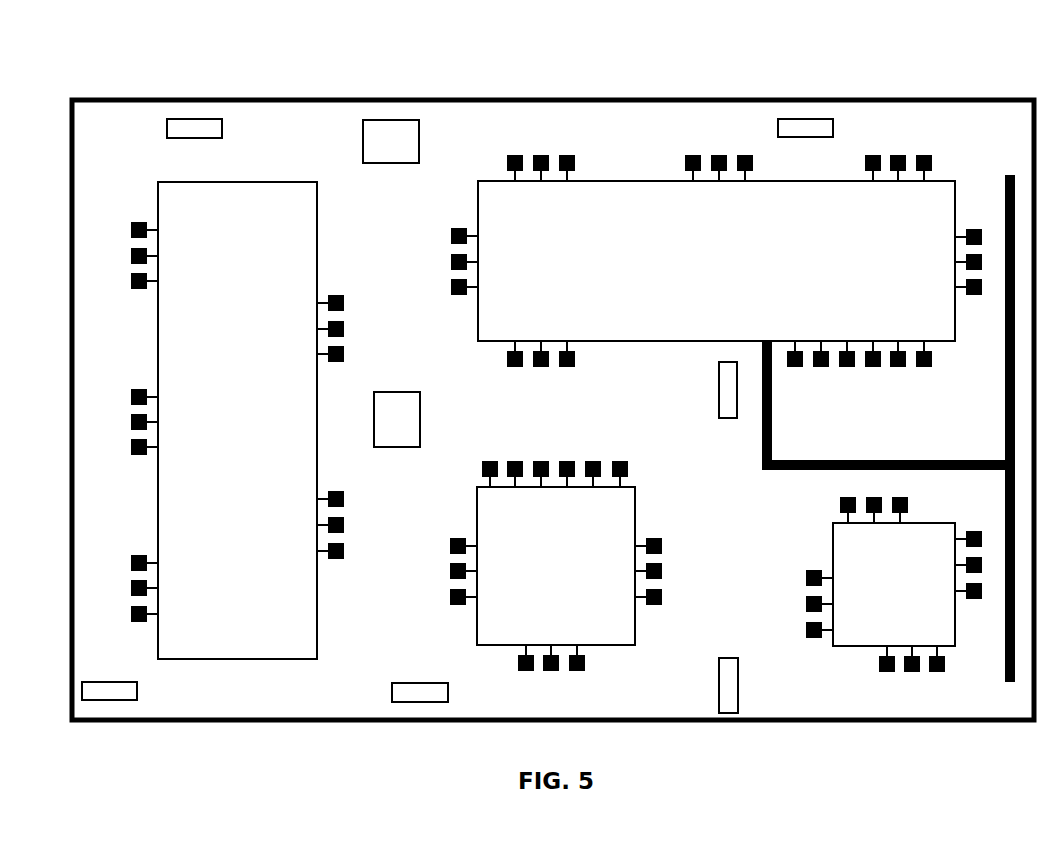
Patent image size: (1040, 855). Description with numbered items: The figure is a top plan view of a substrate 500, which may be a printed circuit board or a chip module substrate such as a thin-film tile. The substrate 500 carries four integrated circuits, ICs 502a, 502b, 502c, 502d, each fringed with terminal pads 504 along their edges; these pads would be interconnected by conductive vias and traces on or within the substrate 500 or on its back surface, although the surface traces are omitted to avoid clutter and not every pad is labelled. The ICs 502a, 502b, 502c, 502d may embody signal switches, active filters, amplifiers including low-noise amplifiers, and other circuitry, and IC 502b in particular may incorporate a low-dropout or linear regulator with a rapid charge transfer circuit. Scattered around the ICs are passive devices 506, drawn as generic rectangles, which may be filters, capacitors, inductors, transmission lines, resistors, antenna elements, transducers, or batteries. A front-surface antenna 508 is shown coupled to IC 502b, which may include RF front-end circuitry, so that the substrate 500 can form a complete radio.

The substrate 500 is at (593, 97).
The IC 502a is at (158, 182).
The IC 502b is at (659, 181).
The IC 502c is at (477, 520).
The IC 502d is at (833, 550).
The terminal pads 504 is at (448, 237).
The passive devices 506 is at (222, 129).
The front-surface antenna 508 is at (937, 460).